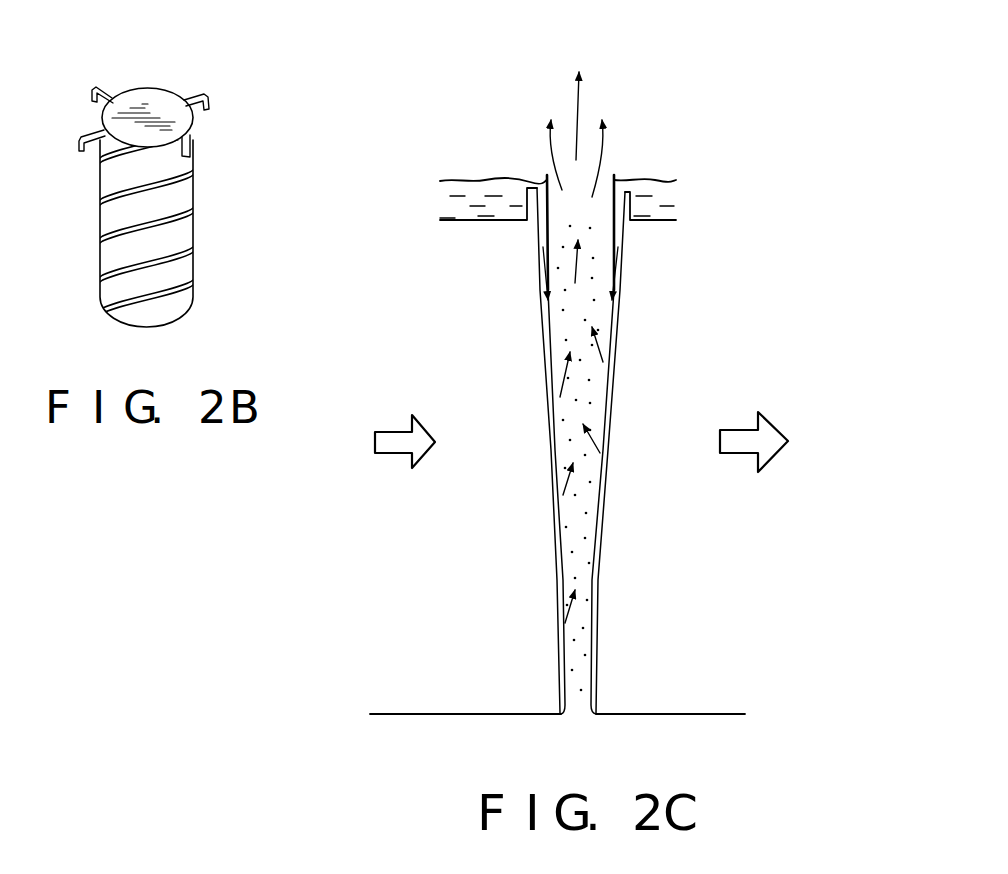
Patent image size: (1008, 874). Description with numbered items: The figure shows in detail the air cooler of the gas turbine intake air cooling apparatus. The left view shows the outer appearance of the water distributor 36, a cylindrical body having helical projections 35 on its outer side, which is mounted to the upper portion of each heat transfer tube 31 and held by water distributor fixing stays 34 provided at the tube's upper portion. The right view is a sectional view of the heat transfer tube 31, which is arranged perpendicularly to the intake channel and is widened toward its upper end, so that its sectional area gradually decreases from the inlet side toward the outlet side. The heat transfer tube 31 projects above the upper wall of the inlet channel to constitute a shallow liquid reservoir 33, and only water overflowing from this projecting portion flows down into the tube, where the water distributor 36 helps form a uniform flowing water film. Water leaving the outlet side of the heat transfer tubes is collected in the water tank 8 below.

In FIG. 2B, the water distributor fixing stay 34 is at (205, 93).
In FIG. 2B, the helical projection 35 is at (197, 150).
In FIG. 2B, the water distributor 36 is at (182, 227).
In FIG. 2C, the water distributor 36 is at (547, 230).
In FIG. 2C, the liquid reservoir 33 is at (660, 186).
In FIG. 2C, the heat transfer tube 31 is at (614, 335).
In FIG. 2C, the water tank 8 is at (635, 730).